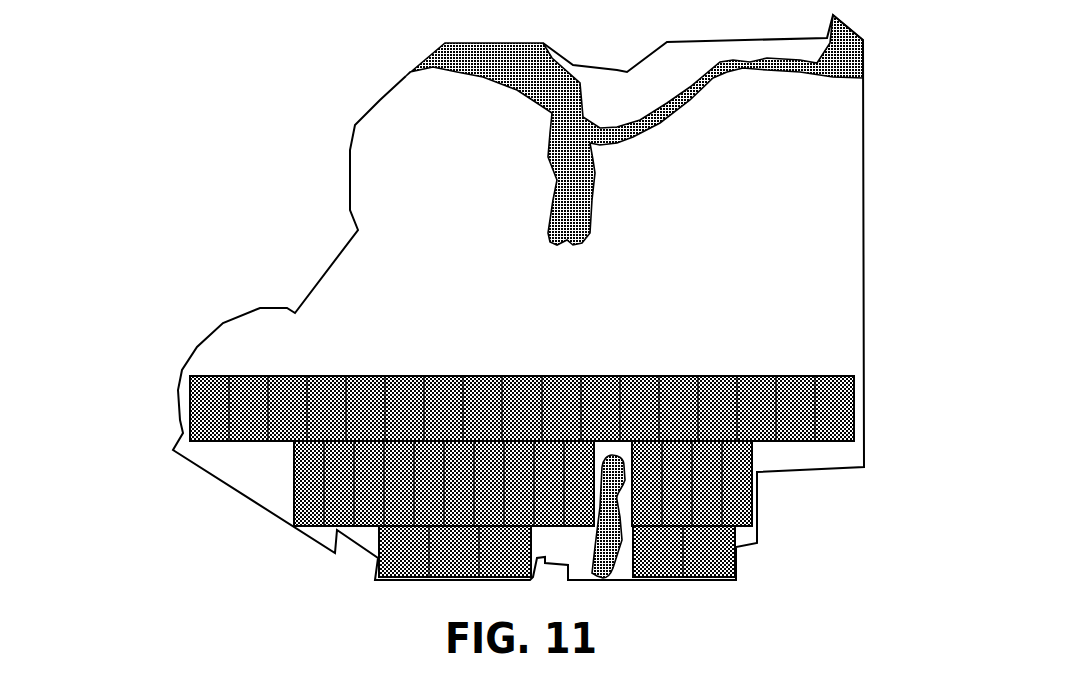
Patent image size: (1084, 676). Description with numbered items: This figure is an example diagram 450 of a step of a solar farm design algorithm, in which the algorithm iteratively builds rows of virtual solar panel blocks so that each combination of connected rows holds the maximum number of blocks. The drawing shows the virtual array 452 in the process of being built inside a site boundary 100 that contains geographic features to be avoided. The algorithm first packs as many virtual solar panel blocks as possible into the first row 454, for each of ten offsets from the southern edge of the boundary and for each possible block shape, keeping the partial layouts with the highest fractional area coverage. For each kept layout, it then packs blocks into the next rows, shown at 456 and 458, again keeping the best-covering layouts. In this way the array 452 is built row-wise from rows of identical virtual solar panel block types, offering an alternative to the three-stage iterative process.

The vehicle body panel outline 100 is at (352, 140).
The diagram 450 is at (459, 297).
The virtual array 452 is at (454, 425).
The first row 454 is at (360, 563).
The next row 456 is at (266, 480).
The next row 458 is at (158, 406).